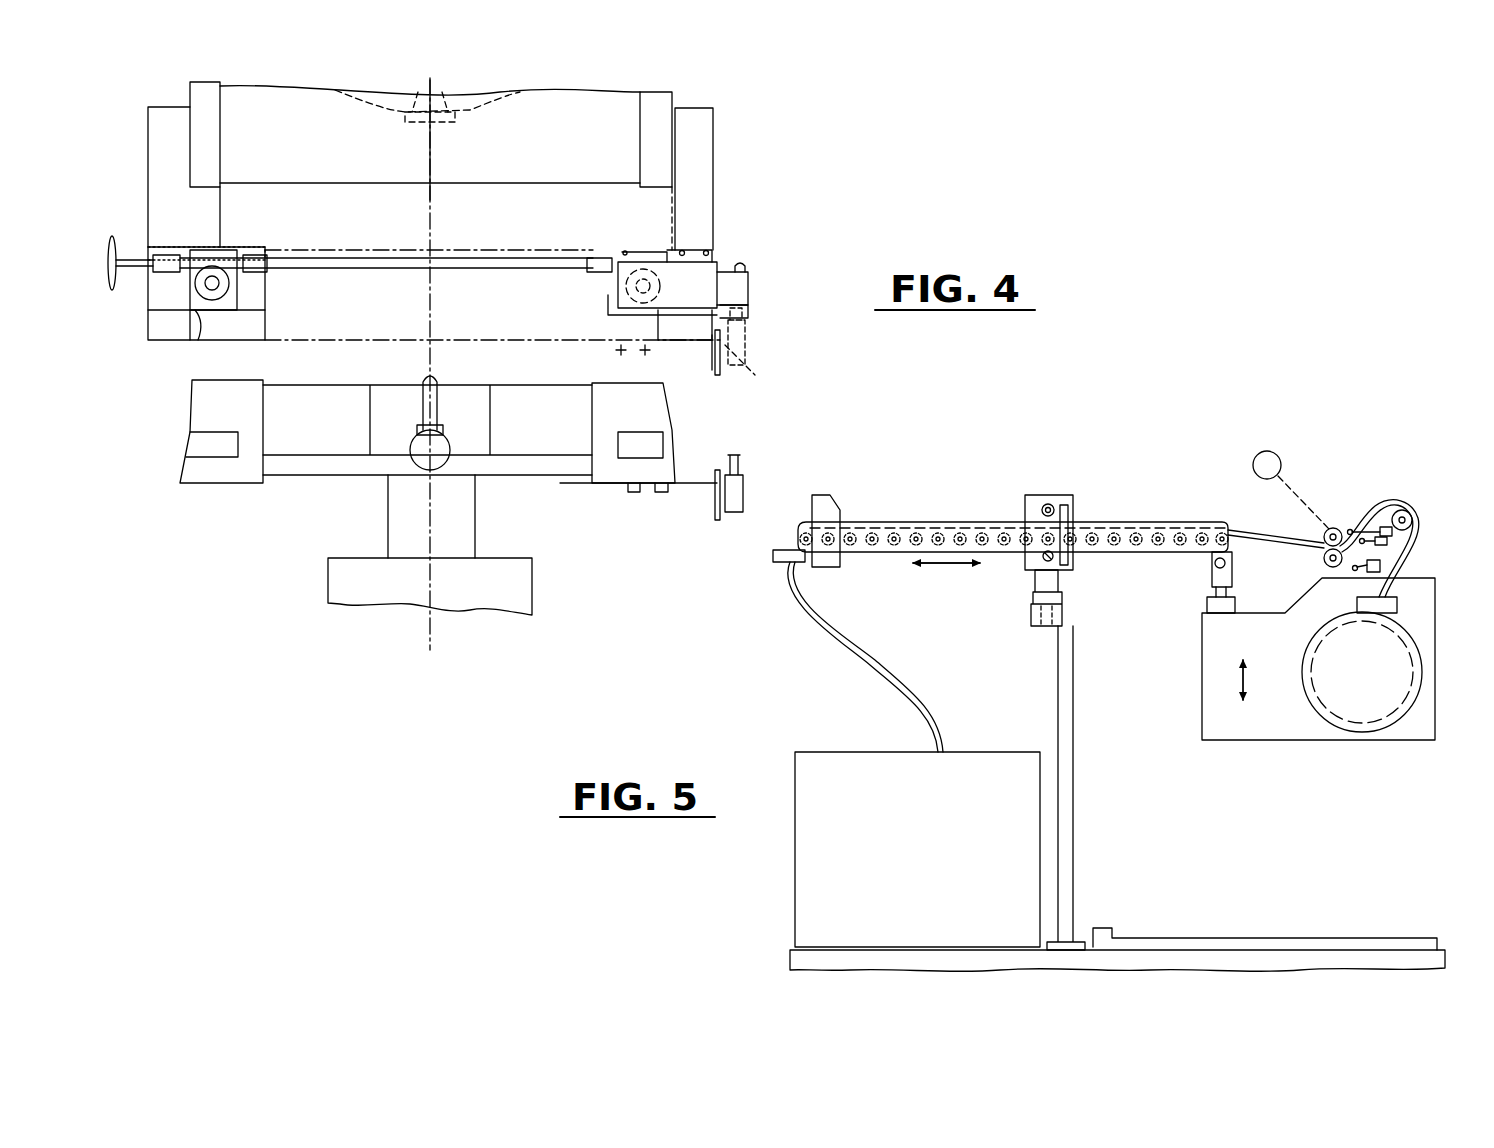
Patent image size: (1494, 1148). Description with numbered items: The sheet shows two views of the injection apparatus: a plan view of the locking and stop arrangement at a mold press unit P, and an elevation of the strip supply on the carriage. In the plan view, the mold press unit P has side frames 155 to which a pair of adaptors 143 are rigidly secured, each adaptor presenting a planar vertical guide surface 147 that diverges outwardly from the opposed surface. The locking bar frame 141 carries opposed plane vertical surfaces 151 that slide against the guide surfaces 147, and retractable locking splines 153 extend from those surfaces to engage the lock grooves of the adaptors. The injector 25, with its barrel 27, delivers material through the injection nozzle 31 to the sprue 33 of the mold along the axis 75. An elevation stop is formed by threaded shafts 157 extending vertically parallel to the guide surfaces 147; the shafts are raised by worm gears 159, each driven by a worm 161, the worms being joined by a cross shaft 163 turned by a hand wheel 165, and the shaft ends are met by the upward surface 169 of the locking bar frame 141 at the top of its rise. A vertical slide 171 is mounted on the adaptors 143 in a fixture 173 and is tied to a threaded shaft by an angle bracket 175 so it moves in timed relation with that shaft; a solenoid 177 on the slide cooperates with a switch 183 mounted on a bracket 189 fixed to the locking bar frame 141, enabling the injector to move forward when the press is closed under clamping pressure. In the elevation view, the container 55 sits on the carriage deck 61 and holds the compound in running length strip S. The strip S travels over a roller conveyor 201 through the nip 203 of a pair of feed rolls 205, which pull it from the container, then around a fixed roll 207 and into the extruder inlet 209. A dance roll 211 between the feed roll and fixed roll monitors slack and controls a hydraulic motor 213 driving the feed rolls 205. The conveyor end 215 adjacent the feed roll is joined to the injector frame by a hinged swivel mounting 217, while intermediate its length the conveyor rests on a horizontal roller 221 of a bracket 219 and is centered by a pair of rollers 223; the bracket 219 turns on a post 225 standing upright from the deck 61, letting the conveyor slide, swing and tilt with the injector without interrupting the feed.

In FIG. 4, the mold press unit P is at (548, 90).
In FIG. 5, the running length strip S is at (864, 647).
In FIG. 4, the reciprocating screw injector 25 is at (402, 608).
In FIG. 5, the reciprocating screw injector 25 is at (1314, 716).
In FIG. 4, the barrel 27 is at (338, 576).
In FIG. 4, the injection nozzle 31 is at (433, 378).
In FIG. 4, the sprue 33 is at (447, 118).
In FIG. 5, the container 55 is at (942, 833).
In FIG. 5, the deck plate 61 is at (826, 947).
In FIG. 4, the axis 75 is at (428, 146).
In FIG. 4, the locking bar frame 141 is at (260, 343).
In FIG. 4, the mold press unit adaptor 143 is at (158, 137).
In FIG. 4, the guide surface 147 is at (205, 335).
In FIG. 4, the plane vertical surface 151 is at (194, 414).
In FIG. 4, the retractable locking spline 153 is at (200, 445).
In FIG. 4, the press side frame 155 is at (205, 92).
In FIG. 4, the threaded shaft 157 is at (218, 288).
In FIG. 4, the worm gear 159 is at (230, 283).
In FIG. 4, the worm 161 is at (218, 258).
In FIG. 4, the cross shaft 163 is at (452, 262).
In FIG. 4, the hand wheel 165 is at (112, 242).
In FIG. 4, the upward surface 169 is at (218, 413).
In FIG. 4, the vertical slide 171 is at (738, 292).
In FIG. 4, the fixture 173 is at (742, 318).
In FIG. 4, the angle bracket 175 is at (700, 268).
In FIG. 4, the solenoid 177 is at (737, 290).
In FIG. 4, the switch 183 is at (745, 366).
In FIG. 4, the bracket 189 is at (706, 506).
In FIG. 5, the roller conveyor 201 is at (968, 520).
In FIG. 5, the nip 203 is at (1326, 556).
In FIG. 5, the feed roll 205 is at (1336, 528).
In FIG. 5, the fixed roll 207 is at (1416, 518).
In FIG. 5, the extruder inlet 209 is at (1362, 598).
In FIG. 5, the dance roll 211 is at (1352, 510).
In FIG. 5, the hydraulic motor 213 is at (1260, 452).
In FIG. 5, the end of the conveyor 215 is at (1208, 556).
In FIG. 5, the mounting 217 is at (1210, 576).
In FIG. 5, the bracket 219 is at (1047, 496).
In FIG. 5, the horizontal roller 221 is at (1040, 565).
In FIG. 5, the rollers 223 is at (1070, 515).
In FIG. 5, the post 225 is at (1060, 683).